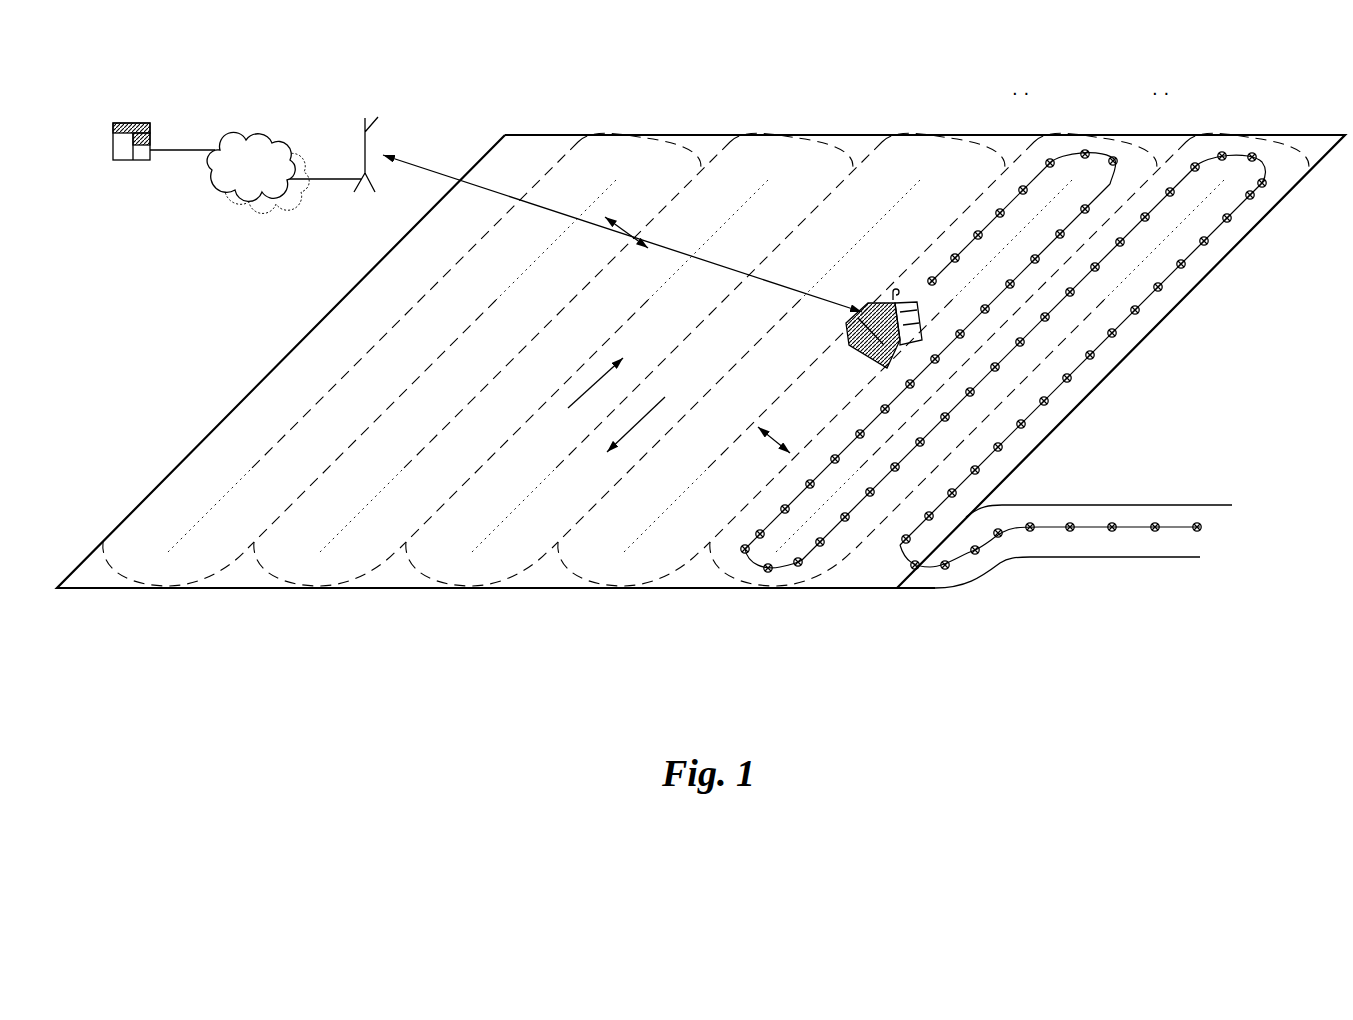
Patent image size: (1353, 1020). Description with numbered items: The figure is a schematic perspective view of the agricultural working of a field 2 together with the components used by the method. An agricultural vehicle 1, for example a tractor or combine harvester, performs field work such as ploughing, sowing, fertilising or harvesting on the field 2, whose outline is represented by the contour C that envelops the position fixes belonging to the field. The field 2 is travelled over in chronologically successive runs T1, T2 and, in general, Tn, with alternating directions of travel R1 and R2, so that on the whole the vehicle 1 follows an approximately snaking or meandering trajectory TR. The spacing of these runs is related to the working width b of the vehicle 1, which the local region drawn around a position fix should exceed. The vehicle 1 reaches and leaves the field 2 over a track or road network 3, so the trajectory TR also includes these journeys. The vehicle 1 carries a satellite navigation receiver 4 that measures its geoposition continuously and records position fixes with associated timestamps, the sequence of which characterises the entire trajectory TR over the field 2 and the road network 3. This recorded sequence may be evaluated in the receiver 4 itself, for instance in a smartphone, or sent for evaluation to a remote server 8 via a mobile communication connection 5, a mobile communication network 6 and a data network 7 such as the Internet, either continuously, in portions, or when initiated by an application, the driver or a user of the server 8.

The agricultural vehicle 1 is at (874, 321).
The field 2 is at (706, 388).
The road network 3 is at (1128, 555).
The satellite navigation receiver 4 is at (880, 300).
The mobile communication connection 5 is at (720, 258).
The mobile communication network 6 is at (385, 123).
The data network 7 is at (266, 130).
The remote server 8 is at (154, 135).
The contour of the field C is at (107, 592).
The first direction of travel R1 is at (636, 426).
The second direction of travel R2 is at (594, 394).
The working width b is at (774, 438).
The first run T1 is at (1110, 395).
The second run T2 is at (1187, 197).
The n-th run Tn is at (1043, 198).
The trajectory TR is at (1103, 525).